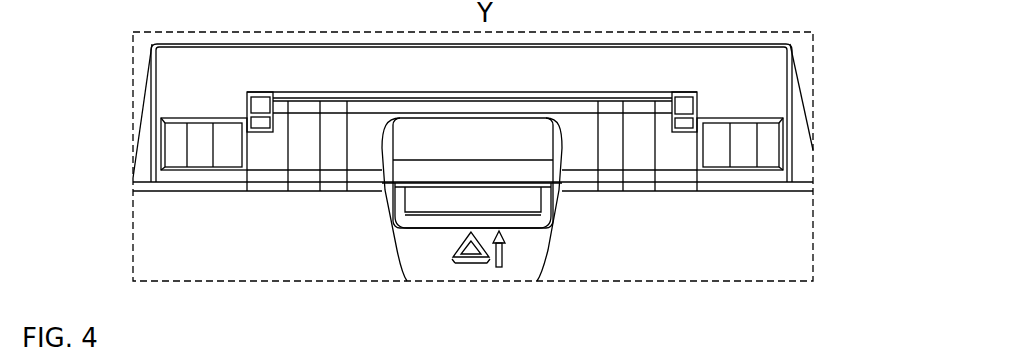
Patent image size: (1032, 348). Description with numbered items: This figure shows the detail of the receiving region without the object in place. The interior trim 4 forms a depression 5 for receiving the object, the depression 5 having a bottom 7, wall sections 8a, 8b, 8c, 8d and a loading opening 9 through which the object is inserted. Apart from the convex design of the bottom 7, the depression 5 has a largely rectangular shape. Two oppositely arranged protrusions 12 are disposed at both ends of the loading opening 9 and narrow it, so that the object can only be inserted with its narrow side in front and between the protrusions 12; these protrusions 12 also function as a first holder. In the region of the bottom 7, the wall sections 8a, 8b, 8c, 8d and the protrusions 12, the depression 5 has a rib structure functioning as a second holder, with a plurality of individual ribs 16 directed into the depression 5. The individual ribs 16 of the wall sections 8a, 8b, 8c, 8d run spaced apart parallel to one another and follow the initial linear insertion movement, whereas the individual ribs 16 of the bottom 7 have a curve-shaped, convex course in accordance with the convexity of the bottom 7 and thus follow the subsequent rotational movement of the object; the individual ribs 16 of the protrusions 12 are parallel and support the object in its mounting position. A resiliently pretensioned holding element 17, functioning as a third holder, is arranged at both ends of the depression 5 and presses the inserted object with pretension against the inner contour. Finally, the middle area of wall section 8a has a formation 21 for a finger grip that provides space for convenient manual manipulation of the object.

The interior trim 4 is at (788, 240).
The depression 5 is at (370, 75).
The bottom 7 is at (578, 104).
The wall section 8a is at (302, 165).
The wall section 8b is at (185, 137).
The wall section 8c is at (429, 96).
The wall section 8d is at (765, 151).
The loading opening 9 is at (671, 160).
The protrusion 12 is at (207, 108).
The individual rib 16 is at (320, 130).
The holding element 17 is at (261, 107).
The formation for a finger grip 21 is at (517, 202).